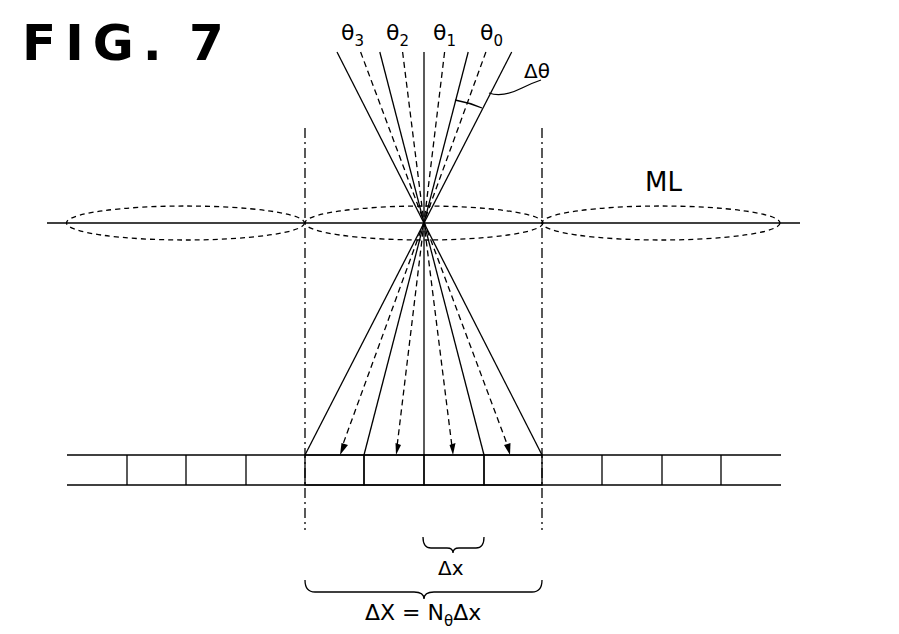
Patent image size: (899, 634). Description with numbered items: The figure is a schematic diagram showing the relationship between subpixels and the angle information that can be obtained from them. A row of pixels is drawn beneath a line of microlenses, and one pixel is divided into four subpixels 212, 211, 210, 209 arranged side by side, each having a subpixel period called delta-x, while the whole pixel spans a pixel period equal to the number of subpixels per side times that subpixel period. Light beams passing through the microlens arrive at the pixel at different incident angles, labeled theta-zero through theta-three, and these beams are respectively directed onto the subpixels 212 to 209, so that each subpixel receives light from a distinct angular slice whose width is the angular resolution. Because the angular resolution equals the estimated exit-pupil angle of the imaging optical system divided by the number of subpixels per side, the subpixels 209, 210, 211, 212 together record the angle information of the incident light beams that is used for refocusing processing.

The subpixel 209 is at (516, 478).
The subpixel 210 is at (457, 478).
The subpixel 211 is at (397, 478).
The subpixel 212 is at (340, 478).